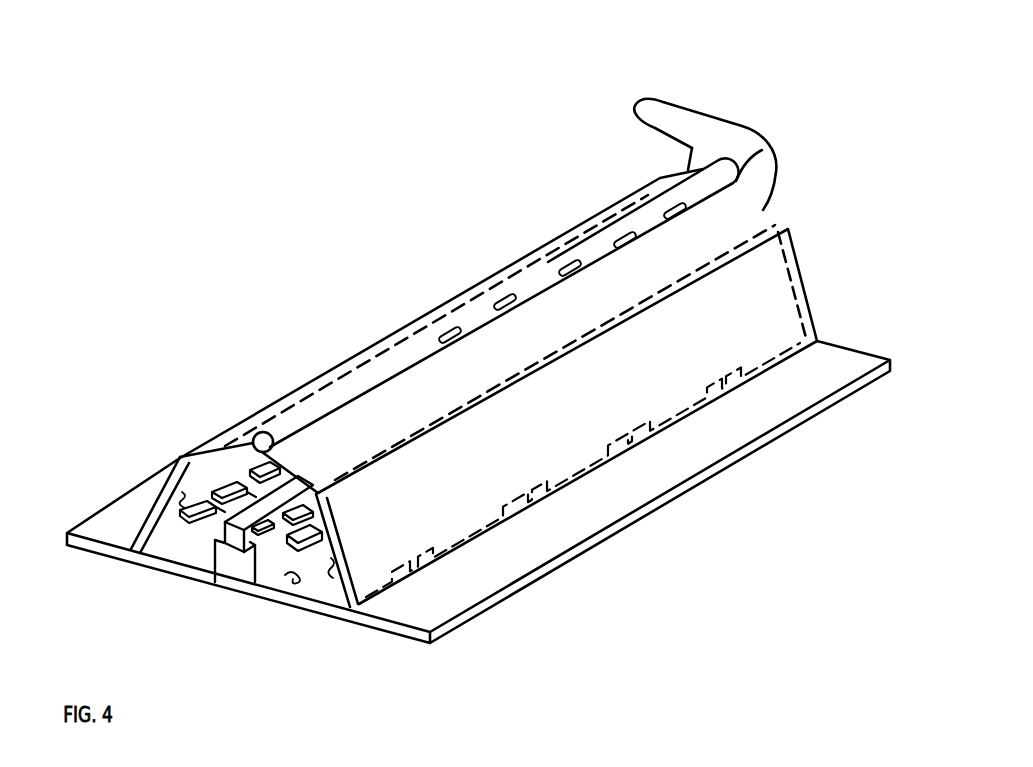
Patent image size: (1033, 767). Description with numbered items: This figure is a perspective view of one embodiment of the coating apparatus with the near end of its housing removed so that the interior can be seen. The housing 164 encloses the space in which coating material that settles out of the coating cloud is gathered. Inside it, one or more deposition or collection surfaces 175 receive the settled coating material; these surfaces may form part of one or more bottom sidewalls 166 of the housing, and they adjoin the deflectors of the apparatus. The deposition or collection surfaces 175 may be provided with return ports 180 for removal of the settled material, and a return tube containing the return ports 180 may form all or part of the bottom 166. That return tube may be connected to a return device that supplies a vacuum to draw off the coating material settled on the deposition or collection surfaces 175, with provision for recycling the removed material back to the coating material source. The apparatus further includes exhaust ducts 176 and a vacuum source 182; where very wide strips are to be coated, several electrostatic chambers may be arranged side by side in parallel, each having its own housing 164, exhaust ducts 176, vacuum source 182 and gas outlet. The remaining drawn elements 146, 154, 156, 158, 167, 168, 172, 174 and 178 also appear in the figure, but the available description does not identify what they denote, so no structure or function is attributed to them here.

The cover housing 146 is at (805, 284).
The rail 154 is at (253, 572).
The end block 156 is at (240, 566).
The lower block 158 is at (226, 566).
The housing 164 is at (748, 222).
The bottom sidewall 166 is at (295, 575).
The side edge 167 is at (175, 468).
The flange panel 168 is at (410, 330).
The leg 172 is at (132, 552).
The contact pads 174 is at (185, 512).
The deposition or collection surface 175 is at (187, 508).
The exhaust duct 176 is at (460, 312).
The slots 178 is at (568, 266).
The return port 180 is at (517, 493).
The vacuum source 182 is at (673, 108).